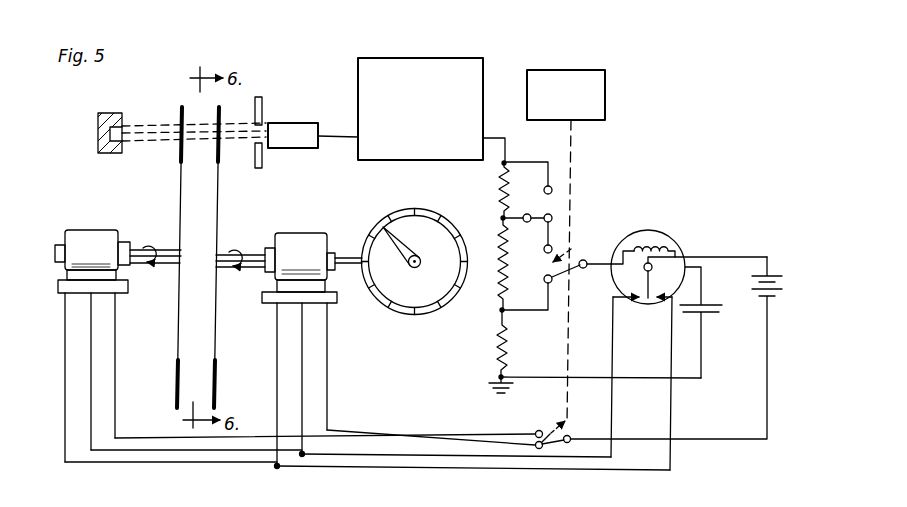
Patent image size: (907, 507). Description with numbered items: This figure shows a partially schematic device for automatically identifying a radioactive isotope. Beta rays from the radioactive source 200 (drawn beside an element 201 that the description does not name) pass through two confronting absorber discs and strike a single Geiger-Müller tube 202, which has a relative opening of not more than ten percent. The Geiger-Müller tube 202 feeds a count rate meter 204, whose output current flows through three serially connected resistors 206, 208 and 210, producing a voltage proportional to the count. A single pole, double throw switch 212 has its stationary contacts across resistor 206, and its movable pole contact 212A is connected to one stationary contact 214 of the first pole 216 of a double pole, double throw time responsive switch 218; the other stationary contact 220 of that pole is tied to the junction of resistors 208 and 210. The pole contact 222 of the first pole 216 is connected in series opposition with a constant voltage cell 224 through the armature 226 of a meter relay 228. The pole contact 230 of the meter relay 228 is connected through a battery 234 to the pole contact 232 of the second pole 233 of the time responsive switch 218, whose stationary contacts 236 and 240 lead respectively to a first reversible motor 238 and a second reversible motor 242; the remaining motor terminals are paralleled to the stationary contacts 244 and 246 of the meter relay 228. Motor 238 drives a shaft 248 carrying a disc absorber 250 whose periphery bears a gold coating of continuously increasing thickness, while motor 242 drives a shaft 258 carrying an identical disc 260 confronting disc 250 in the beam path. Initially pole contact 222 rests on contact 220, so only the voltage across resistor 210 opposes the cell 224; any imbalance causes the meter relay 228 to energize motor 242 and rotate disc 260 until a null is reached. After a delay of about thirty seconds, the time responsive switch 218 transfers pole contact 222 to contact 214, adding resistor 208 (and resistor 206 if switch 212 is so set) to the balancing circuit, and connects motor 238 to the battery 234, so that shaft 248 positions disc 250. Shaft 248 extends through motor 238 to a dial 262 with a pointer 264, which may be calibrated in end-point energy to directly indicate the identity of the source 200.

The source 200 is at (122, 126).
The radiation source 201 is at (100, 153).
The Geiger-Müller tube 202 is at (285, 136).
The count rate meter 204 is at (422, 64).
The resistor 206 is at (497, 183).
The resistor 208 is at (500, 286).
The resistor 210 is at (495, 341).
The single pole, double throw switch 212 is at (537, 203).
The pole contact 212A is at (551, 216).
The stationary contact 214 is at (551, 248).
The first pole 216 is at (567, 276).
The time responsive switch 218 is at (605, 83).
The stationary contact 220 is at (527, 292).
The pole contact 222 is at (585, 261).
The cell 224 is at (722, 307).
The armature 226 is at (651, 245).
The meter relay 228 is at (680, 232).
The pole contact 230 is at (653, 285).
The pole contact 232 is at (550, 431).
The second pole 233 is at (569, 426).
The battery 234 is at (780, 272).
The stationary contact 236 is at (536, 432).
The first reversible motor 238 is at (312, 349).
The stationary contact 240 is at (538, 449).
The second reversible motor 242 is at (92, 346).
The stationary contact 244 is at (628, 301).
The stationary contact 246 is at (660, 302).
The shaft 248 is at (234, 256).
The disc absorber 250 is at (222, 200).
The shaft 258 is at (149, 252).
The disc 260 is at (177, 172).
The dial 262 is at (397, 288).
The pointer 264 is at (384, 226).